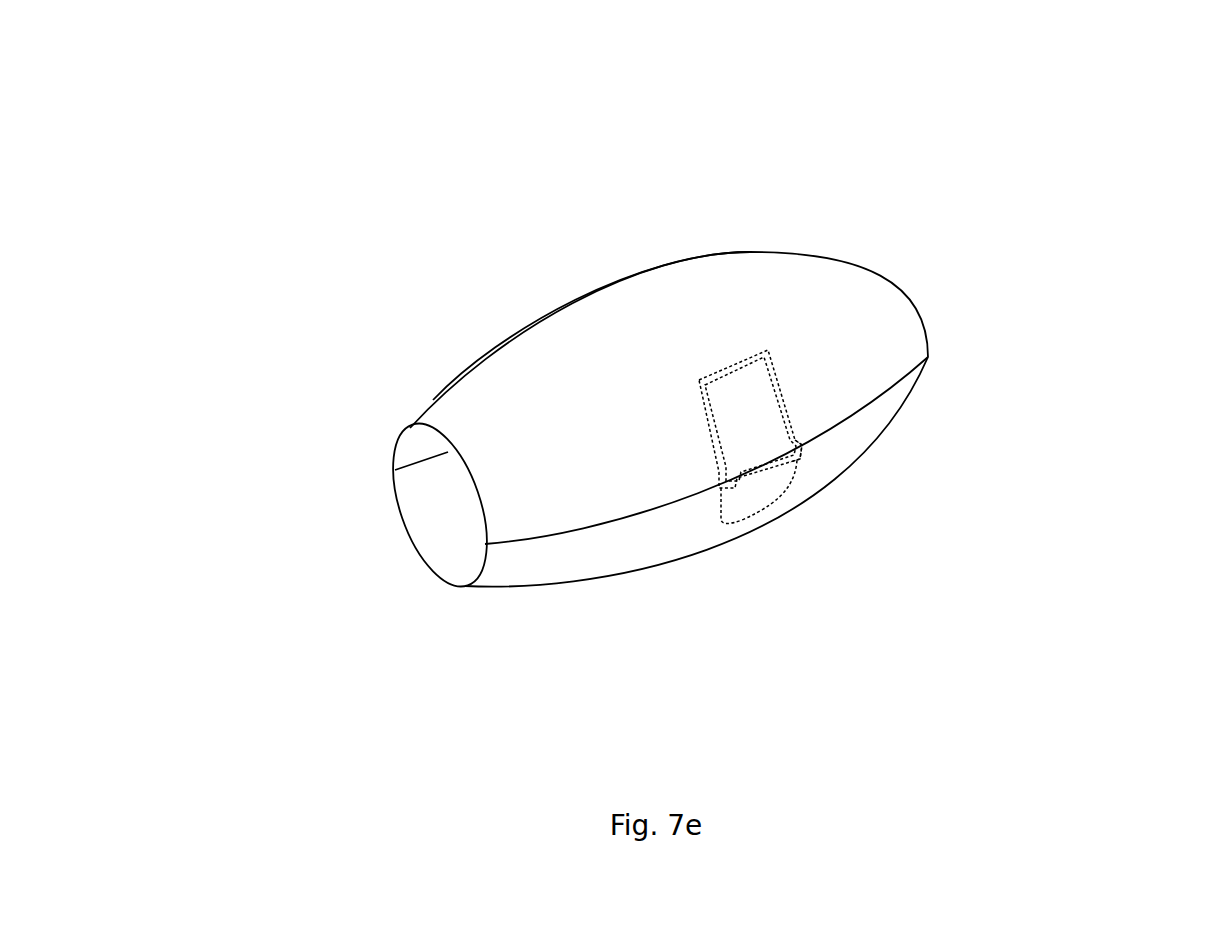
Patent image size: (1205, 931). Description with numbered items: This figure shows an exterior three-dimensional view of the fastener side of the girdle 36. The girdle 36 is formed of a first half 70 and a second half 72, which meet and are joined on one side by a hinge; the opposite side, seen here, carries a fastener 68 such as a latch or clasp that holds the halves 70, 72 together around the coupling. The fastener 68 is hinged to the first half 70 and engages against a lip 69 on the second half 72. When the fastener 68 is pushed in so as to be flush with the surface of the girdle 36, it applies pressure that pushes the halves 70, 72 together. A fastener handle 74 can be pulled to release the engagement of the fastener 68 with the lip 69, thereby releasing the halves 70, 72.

The girdle 36 is at (925, 315).
The second half 72 is at (488, 430).
The first half 70 is at (517, 573).
The fastener handle 74 is at (718, 368).
The fastener 68 is at (797, 460).
The lip 69 is at (748, 473).